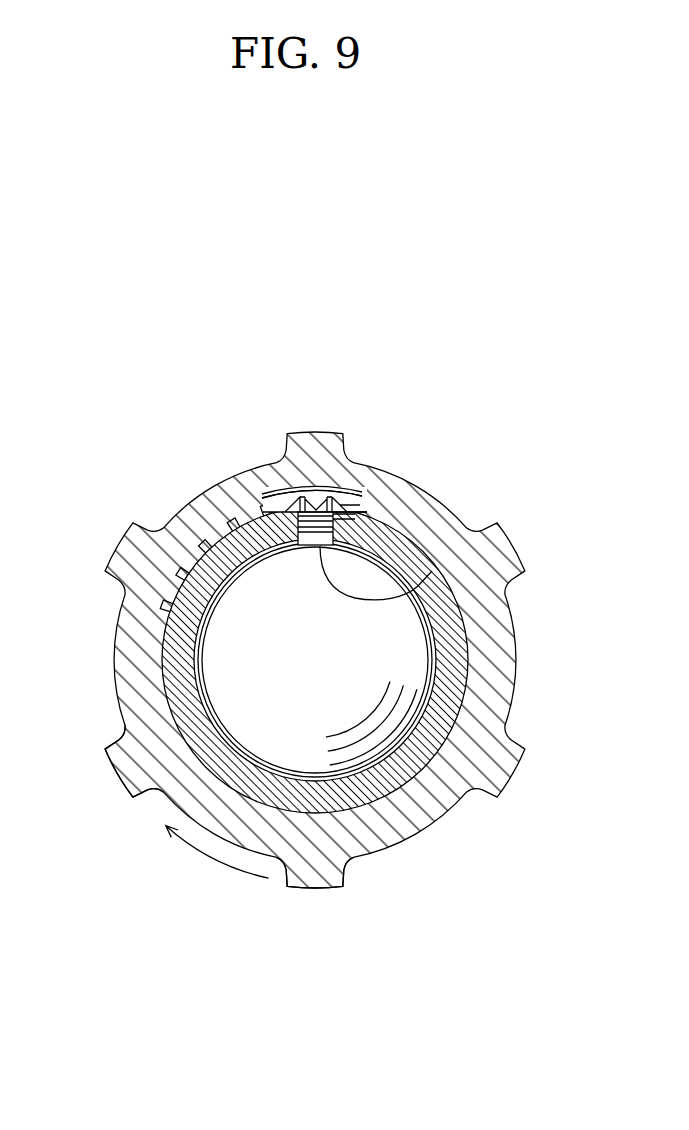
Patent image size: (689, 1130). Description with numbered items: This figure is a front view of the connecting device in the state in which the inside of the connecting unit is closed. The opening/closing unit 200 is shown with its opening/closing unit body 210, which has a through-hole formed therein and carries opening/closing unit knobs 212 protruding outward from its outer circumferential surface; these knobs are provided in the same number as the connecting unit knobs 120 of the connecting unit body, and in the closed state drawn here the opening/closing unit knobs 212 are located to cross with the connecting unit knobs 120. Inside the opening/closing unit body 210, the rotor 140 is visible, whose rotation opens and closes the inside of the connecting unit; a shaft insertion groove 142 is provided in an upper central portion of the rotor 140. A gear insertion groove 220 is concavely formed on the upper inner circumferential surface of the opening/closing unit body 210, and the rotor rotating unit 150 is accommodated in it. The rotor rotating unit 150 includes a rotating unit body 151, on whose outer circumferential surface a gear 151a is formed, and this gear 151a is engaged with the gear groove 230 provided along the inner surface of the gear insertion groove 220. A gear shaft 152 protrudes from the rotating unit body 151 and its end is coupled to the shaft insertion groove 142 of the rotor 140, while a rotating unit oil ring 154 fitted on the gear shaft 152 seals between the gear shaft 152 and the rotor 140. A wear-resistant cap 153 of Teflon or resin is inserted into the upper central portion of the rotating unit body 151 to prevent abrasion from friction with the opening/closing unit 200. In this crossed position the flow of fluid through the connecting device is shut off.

The connecting unit knob 120 is at (121, 766).
The rotor 140 is at (224, 658).
The shaft insertion groove 142 is at (405, 589).
The rotor rotating unit 150 is at (353, 485).
The rotating unit body 151 is at (283, 492).
The gear 151a is at (283, 497).
The gear shaft 152 is at (334, 528).
The wear-resistant cap 153 is at (322, 496).
The rotating unit oil ring 154 is at (387, 508).
The opening/closing unit 200 is at (431, 840).
The opening/closing unit body 210 is at (500, 663).
The opening/closing unit knob 212 is at (313, 887).
The gear insertion groove 220 is at (186, 512).
The gear groove 230 is at (180, 572).